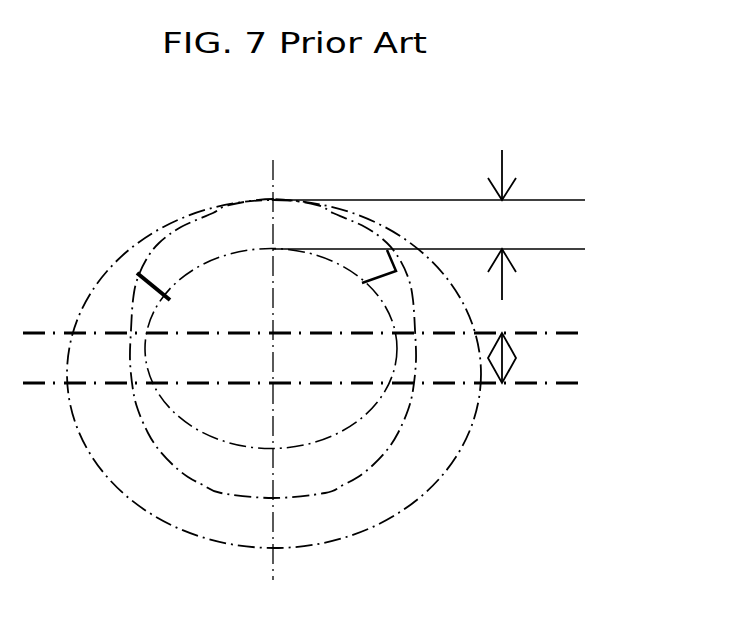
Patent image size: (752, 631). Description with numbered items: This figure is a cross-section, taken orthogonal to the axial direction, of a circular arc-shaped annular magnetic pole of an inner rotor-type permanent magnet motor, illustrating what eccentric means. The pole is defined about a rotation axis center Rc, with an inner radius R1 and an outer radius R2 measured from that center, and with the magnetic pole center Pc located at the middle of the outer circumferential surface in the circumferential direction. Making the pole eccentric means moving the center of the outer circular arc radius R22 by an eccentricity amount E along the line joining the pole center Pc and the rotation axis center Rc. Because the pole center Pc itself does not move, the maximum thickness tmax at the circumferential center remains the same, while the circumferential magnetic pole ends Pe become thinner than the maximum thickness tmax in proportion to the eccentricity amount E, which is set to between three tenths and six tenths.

The magnetic pole center Pc is at (275, 198).
The circumferential direction magnetic pole ends Pe is at (142, 275).
The inner radius R1 is at (203, 296).
The outer radius R2 is at (273, 383).
The outer radius of circular arc R22 is at (404, 302).
The rotation axis center Rc is at (271, 349).
The maximum thickness tmax is at (429, 225).
The eccentricity amount E is at (336, 374).